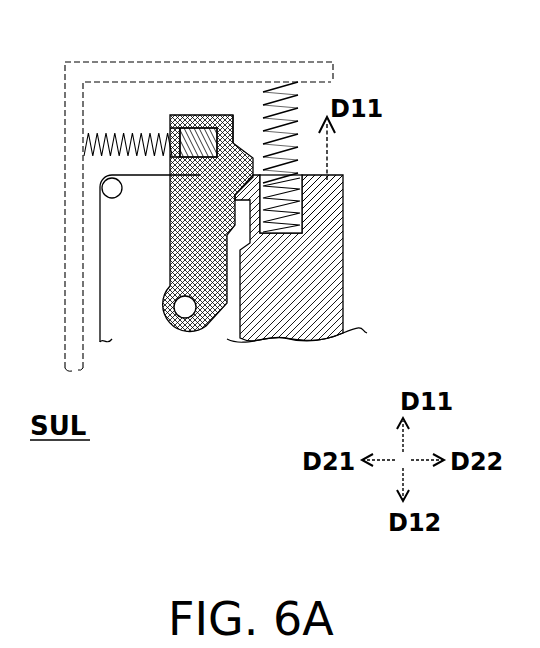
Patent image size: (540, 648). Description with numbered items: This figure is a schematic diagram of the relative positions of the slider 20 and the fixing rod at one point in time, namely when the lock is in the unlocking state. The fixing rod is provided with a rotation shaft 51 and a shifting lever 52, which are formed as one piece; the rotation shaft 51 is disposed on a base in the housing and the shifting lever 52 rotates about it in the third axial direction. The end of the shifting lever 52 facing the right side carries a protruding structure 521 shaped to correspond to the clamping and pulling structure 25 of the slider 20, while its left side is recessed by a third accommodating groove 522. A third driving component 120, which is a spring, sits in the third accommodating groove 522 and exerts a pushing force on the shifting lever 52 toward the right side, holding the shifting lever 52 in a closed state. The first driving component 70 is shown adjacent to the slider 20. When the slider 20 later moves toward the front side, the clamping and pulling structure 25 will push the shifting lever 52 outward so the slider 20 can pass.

The third driving component 120 is at (102, 127).
The third accommodating groove 522 is at (178, 114).
The protruding structure 521 is at (246, 158).
The clamping and pulling structure 25 is at (302, 197).
The first driving component 70 is at (308, 230).
The slider 20 is at (300, 268).
The rotation shaft 51 is at (187, 312).
The shifting lever 52 is at (229, 311).